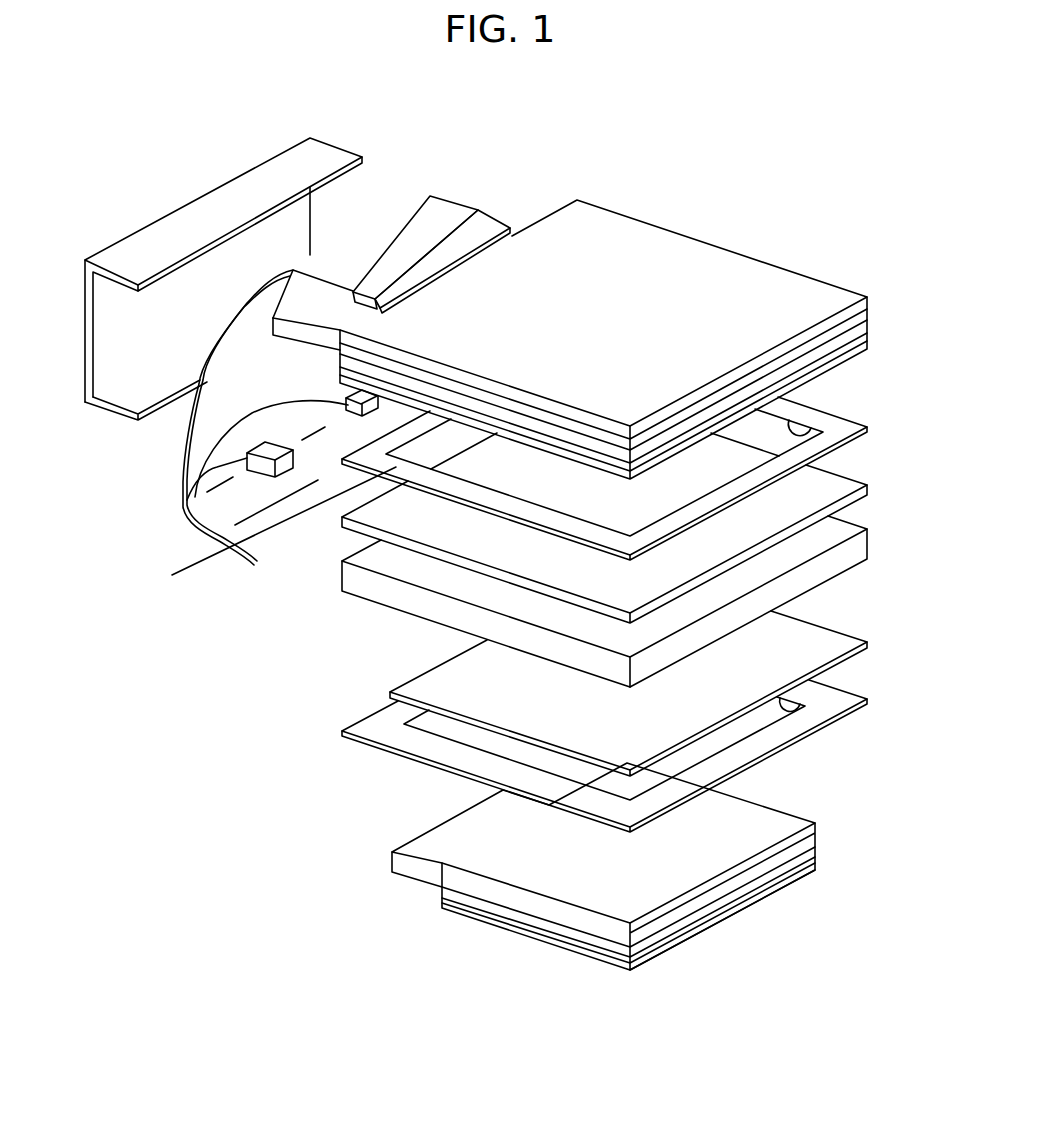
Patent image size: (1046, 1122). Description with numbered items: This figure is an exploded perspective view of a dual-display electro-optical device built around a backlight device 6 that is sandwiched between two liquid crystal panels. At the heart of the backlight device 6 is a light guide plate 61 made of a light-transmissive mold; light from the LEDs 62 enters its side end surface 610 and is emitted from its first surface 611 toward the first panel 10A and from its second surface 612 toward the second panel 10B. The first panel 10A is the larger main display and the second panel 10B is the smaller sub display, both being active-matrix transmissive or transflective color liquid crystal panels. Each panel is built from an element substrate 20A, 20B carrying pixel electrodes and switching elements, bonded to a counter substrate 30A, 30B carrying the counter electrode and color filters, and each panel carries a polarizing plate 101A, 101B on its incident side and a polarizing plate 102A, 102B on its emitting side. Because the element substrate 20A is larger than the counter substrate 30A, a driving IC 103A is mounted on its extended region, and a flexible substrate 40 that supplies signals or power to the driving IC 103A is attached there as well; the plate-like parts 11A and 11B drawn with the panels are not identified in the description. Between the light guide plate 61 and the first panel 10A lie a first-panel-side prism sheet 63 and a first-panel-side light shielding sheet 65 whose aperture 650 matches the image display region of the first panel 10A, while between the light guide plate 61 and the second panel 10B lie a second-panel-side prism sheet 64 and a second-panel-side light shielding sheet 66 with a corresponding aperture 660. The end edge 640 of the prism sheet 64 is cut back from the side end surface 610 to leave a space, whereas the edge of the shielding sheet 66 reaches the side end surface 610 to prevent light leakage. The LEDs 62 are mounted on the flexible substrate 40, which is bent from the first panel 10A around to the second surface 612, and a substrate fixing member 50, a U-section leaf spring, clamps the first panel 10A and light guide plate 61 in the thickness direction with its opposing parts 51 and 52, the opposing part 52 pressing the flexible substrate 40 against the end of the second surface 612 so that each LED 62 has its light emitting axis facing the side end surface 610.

The backlight device 6 is at (472, 553).
The first panel 10A is at (609, 304).
The second panel 10B is at (640, 914).
The first circuit board 11A is at (530, 210).
The second circuit board 11B is at (412, 875).
The element substrate 20A is at (785, 357).
The element substrate 20B is at (582, 923).
The counter substrate 30A is at (733, 407).
The counter substrate 30B is at (603, 947).
The flexible substrate 40 is at (403, 217).
The substrate fixing member 50 is at (205, 286).
The opposing part 51 is at (157, 233).
The opposing part 52 is at (118, 418).
The light guide plate 61 is at (538, 601).
The LED 62 is at (241, 445).
The first-panel-side prism sheet 63 is at (330, 530).
The second-panel-side prism sheet 64 is at (568, 693).
The first-panel-side light shielding sheet 65 is at (228, 535).
The second-panel-side light shielding sheet 66 is at (586, 756).
The polarizing plate 101A is at (850, 357).
The polarizing plate 101B is at (747, 822).
The polarizing plate 102A is at (833, 315).
The polarizing plate 102B is at (788, 887).
The driving IC 103A is at (490, 228).
The side end surface 610 is at (338, 568).
The first surface 611 is at (352, 583).
The second surface 612 is at (418, 620).
The end edge 640 is at (412, 672).
The aperture 650 is at (835, 443).
The aperture 660 is at (423, 718).